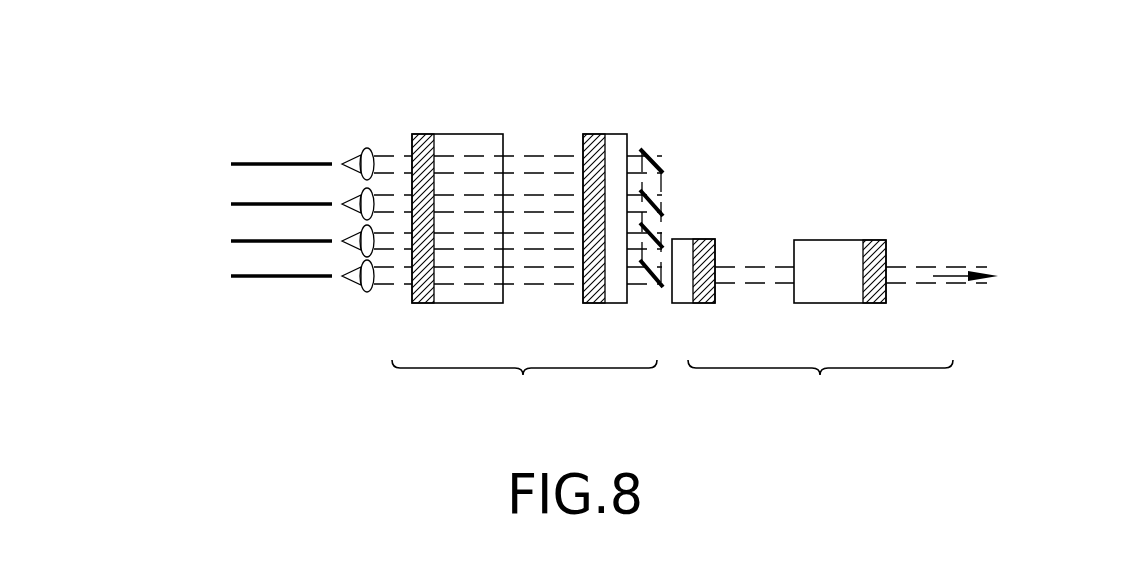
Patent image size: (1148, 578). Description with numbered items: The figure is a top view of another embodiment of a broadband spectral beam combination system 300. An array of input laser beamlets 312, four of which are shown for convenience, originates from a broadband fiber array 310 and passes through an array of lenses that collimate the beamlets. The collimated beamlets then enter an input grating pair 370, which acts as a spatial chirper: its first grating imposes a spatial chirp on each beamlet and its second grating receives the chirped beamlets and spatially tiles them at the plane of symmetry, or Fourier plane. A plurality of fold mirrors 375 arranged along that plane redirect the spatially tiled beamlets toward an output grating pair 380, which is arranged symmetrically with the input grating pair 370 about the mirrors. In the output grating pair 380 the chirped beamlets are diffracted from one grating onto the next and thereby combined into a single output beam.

The broadband SBC system 300 is at (892, 153).
The broadband fiber array 310 is at (301, 163).
The input beamlets 312 is at (392, 155).
The input grating pair 370 is at (524, 279).
The fold mirrors 375 is at (660, 170).
The output grating pair 380 is at (812, 332).